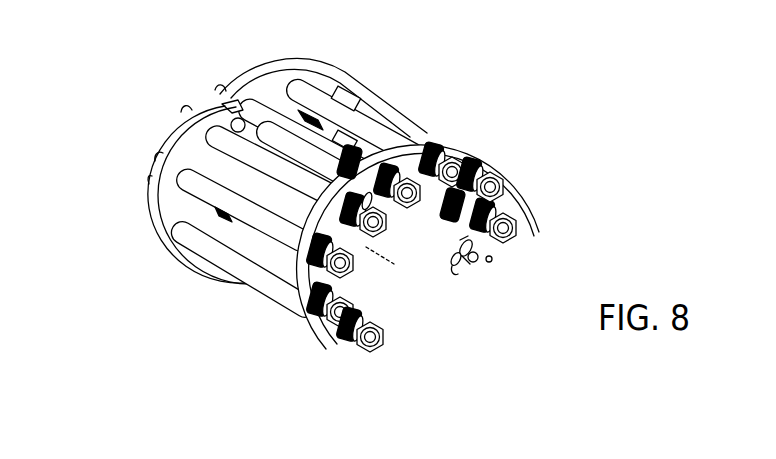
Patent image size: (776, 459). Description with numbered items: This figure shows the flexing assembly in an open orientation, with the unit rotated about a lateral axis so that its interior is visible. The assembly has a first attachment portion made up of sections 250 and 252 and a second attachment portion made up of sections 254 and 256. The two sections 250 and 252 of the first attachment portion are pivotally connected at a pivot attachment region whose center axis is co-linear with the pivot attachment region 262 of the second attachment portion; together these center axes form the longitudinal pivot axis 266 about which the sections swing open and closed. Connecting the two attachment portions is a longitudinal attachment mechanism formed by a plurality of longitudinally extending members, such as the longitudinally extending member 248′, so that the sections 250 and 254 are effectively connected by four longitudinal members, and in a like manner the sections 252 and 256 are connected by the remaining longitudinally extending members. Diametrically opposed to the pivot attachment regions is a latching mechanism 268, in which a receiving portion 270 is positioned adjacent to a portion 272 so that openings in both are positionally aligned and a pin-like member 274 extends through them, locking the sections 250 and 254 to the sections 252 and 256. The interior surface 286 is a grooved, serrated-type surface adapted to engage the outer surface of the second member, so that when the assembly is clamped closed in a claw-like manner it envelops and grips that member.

The longitudinally extending member 248′ is at (217, 239).
The first section of the first attachment portion 250 is at (161, 178).
The second section of the first attachment portion 252 is at (291, 61).
The first section of the second attachment portion 254 is at (302, 303).
The second section of the second attachment portion 256 is at (461, 156).
The pivot attachment region 262 is at (369, 204).
The longitudinal pivot axis 266 is at (372, 258).
The latching mechanism 268 is at (492, 259).
The receiving portion 270 is at (375, 318).
The portion 272 is at (457, 259).
The pin-like member 274 is at (490, 252).
The interior surface 286 is at (503, 201).